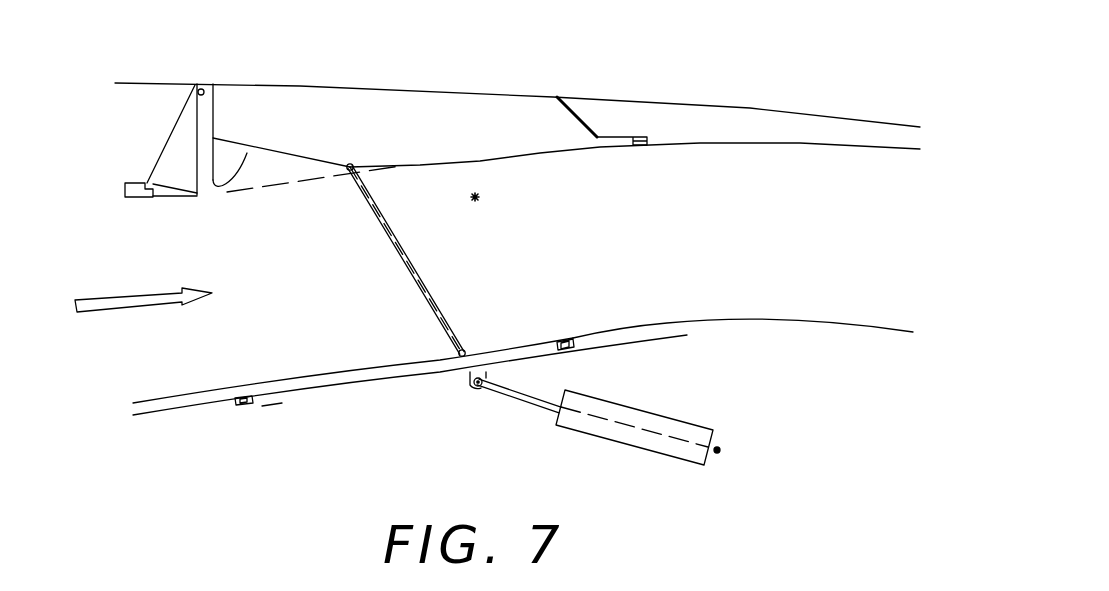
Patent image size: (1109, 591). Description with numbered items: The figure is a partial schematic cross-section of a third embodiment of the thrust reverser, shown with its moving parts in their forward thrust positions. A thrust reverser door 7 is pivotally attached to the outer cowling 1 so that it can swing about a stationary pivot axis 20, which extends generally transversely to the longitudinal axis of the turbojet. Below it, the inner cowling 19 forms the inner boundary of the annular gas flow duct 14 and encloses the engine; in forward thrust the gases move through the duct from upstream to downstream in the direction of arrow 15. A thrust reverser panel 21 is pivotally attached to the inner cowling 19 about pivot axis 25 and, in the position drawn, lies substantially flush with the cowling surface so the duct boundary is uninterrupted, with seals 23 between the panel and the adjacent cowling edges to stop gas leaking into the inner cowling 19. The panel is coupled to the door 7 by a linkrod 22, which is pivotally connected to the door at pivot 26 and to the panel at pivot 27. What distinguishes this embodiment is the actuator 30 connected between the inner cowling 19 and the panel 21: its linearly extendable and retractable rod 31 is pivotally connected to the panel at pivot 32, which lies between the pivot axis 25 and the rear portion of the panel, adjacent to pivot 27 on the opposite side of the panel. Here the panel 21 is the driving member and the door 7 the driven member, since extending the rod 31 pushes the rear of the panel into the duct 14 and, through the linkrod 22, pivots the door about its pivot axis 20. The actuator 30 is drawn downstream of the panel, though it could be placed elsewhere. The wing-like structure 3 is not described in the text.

The outer cowling 1 is at (180, 130).
The wing 3 is at (690, 100).
The thrust reverser door 7 is at (292, 110).
The annular gas flow duct 14 is at (185, 237).
The arrow 15 is at (137, 303).
The inner cowling 19 is at (670, 322).
The stationary pivot axis 20 is at (480, 199).
The thrust reverser panel 21 is at (348, 383).
The linkrod 22 is at (405, 267).
The seals 23 is at (245, 407).
The pivot axis 25 is at (272, 405).
The pivot 26 is at (347, 171).
The pivot 27 is at (463, 349).
The actuator 30 is at (623, 420).
The rod 31 is at (520, 397).
The pivot 32 is at (473, 387).